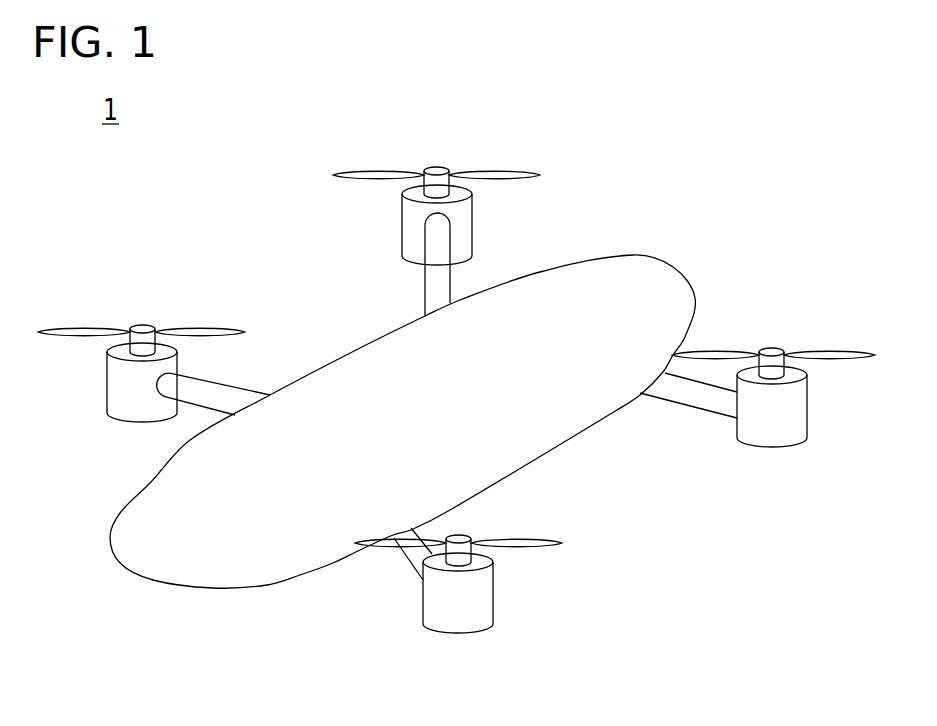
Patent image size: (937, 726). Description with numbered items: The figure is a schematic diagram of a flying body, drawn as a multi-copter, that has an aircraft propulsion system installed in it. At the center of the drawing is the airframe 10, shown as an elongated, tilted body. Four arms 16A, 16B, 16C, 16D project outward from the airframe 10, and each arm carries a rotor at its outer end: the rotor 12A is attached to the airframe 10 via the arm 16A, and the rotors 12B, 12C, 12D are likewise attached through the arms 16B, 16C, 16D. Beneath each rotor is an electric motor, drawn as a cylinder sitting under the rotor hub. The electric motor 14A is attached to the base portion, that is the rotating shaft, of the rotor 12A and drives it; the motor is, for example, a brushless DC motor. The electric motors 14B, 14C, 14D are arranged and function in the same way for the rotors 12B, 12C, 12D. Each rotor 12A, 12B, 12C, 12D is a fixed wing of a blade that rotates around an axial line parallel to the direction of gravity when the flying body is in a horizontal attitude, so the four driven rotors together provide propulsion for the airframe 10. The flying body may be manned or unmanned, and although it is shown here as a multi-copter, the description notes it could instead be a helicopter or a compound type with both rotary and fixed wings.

The airframe 10 is at (152, 583).
The rotor 12A is at (197, 328).
The rotor 12B is at (493, 172).
The rotor 12C is at (527, 548).
The rotor 12D is at (840, 360).
The electric motor 14A is at (107, 383).
The electric motor 14B is at (402, 222).
The electric motor 14C is at (455, 634).
The electric motor 14D is at (768, 447).
The arm 16A is at (247, 387).
The arm 16B is at (425, 280).
The arm 16C is at (407, 567).
The arm 16D is at (690, 408).